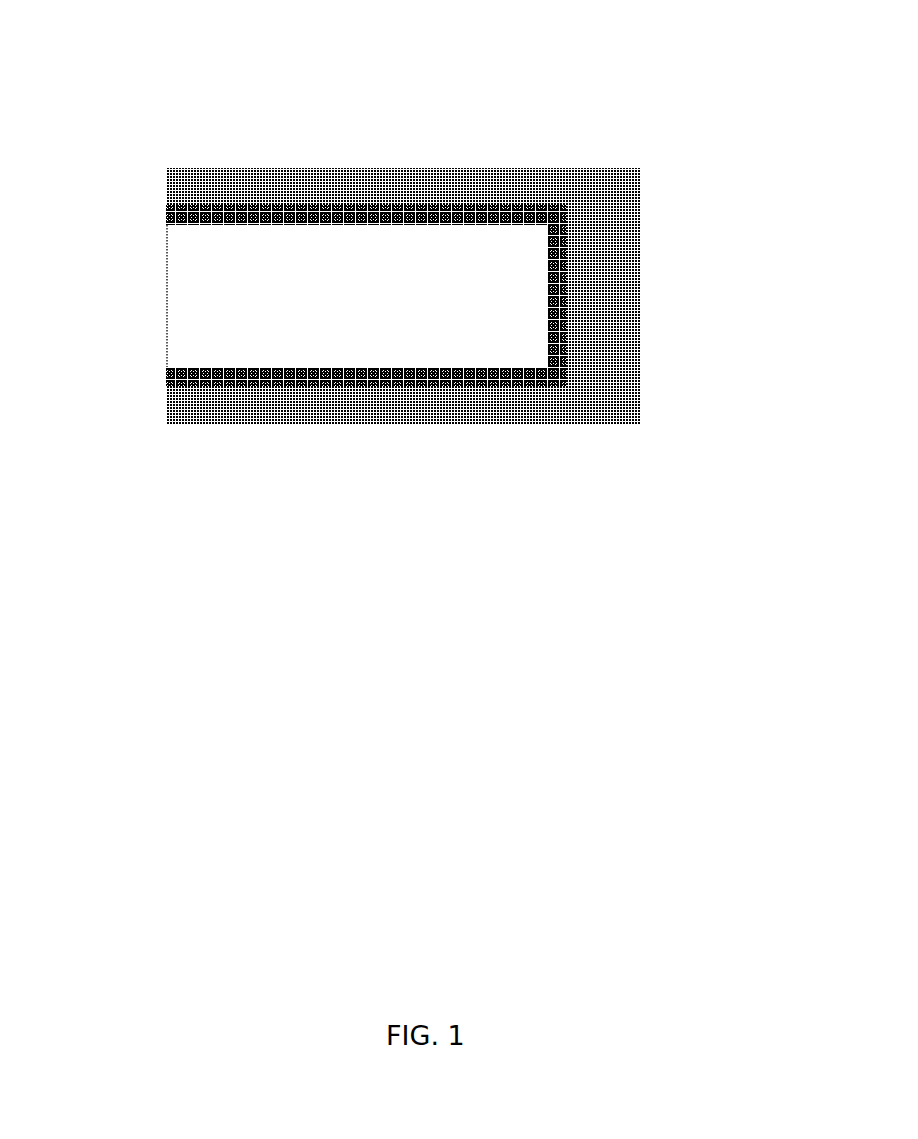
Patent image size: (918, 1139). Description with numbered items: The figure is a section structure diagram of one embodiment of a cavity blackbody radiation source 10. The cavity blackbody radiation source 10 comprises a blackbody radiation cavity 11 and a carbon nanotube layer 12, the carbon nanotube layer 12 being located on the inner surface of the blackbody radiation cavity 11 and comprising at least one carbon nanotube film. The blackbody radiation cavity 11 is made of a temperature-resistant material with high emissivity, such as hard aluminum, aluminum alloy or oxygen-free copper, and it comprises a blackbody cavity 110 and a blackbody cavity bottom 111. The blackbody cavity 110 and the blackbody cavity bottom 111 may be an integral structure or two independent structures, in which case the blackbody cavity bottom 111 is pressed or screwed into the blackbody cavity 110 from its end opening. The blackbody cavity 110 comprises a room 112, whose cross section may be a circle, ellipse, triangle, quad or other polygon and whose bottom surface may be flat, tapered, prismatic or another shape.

The cavity blackbody radiation source 10 is at (420, 216).
The blackbody radiation cavity 11 is at (480, 255).
The blackbody cavity 110 is at (525, 180).
The blackbody cavity bottom 111 is at (628, 230).
The room 112 is at (240, 280).
The carbon nanotube layer 12 is at (180, 217).